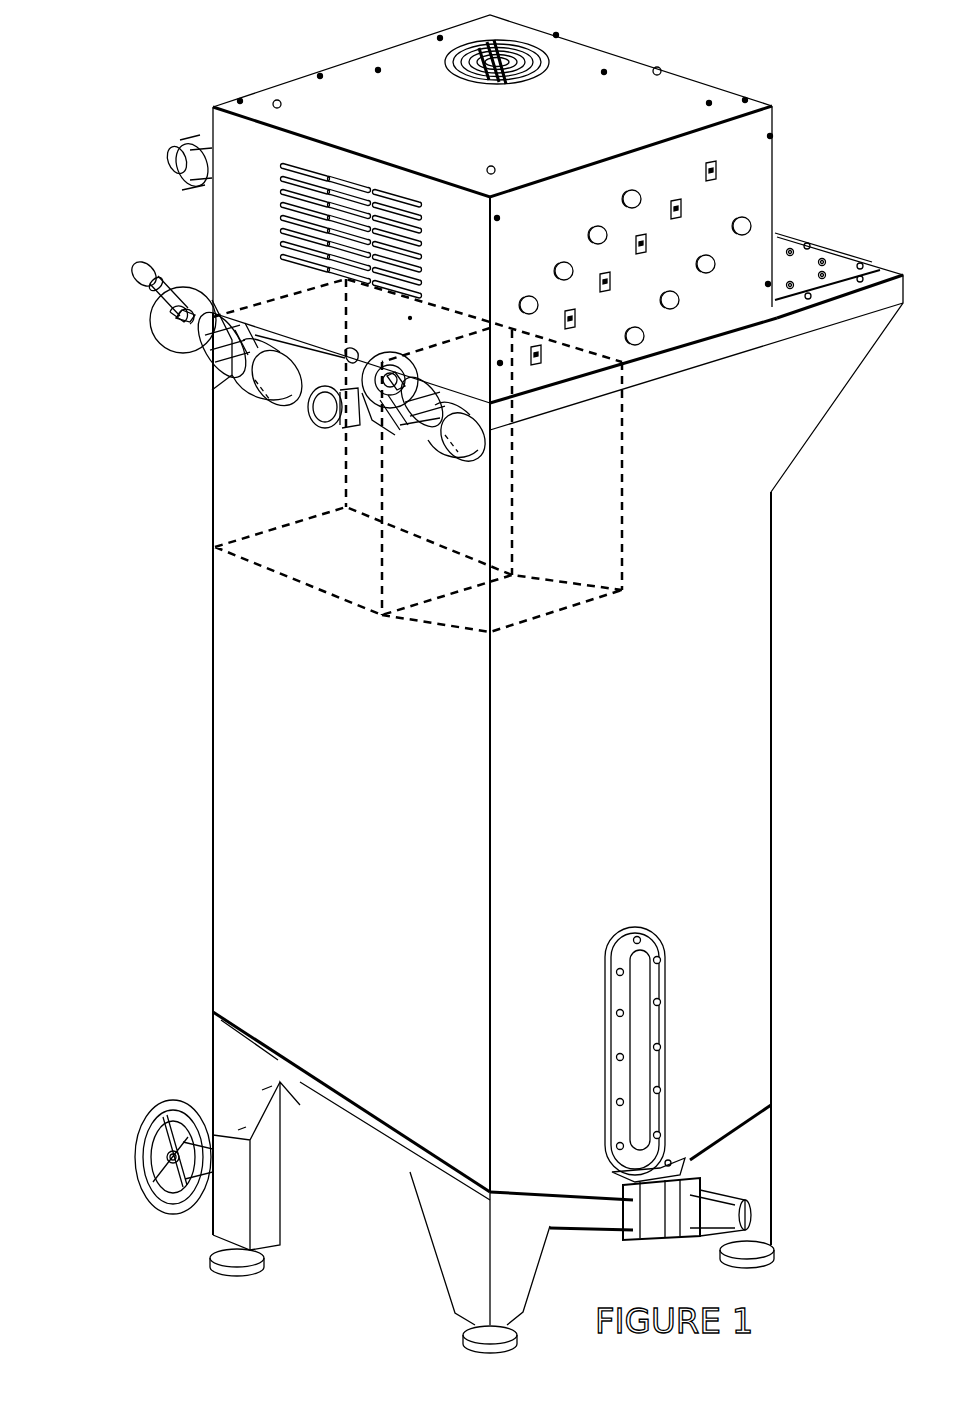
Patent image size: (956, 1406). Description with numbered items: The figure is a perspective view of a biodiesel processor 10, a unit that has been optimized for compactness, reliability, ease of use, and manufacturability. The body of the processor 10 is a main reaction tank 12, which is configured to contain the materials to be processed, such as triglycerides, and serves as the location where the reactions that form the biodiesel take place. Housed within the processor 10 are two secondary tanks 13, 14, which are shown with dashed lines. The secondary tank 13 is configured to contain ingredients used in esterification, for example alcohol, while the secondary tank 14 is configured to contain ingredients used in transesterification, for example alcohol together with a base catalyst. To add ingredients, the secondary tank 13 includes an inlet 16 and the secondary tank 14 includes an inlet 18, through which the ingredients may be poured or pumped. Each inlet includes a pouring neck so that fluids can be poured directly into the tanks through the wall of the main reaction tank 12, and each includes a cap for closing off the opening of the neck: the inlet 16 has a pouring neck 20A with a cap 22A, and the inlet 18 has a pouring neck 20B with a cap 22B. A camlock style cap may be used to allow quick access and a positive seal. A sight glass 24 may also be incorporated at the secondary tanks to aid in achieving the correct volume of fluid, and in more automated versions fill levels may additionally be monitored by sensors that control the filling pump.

The biodiesel processor 10 is at (815, 435).
The main reaction tank 12 is at (718, 945).
The secondary tank 13 is at (560, 520).
The secondary tank 14 is at (282, 475).
The inlet 16 is at (345, 360).
The inlet 18 is at (193, 297).
The pouring neck 20A is at (463, 470).
The pouring neck 20B is at (252, 405).
The cap 22A is at (410, 440).
The cap 22B is at (170, 330).
The sight glass 24 is at (345, 415).